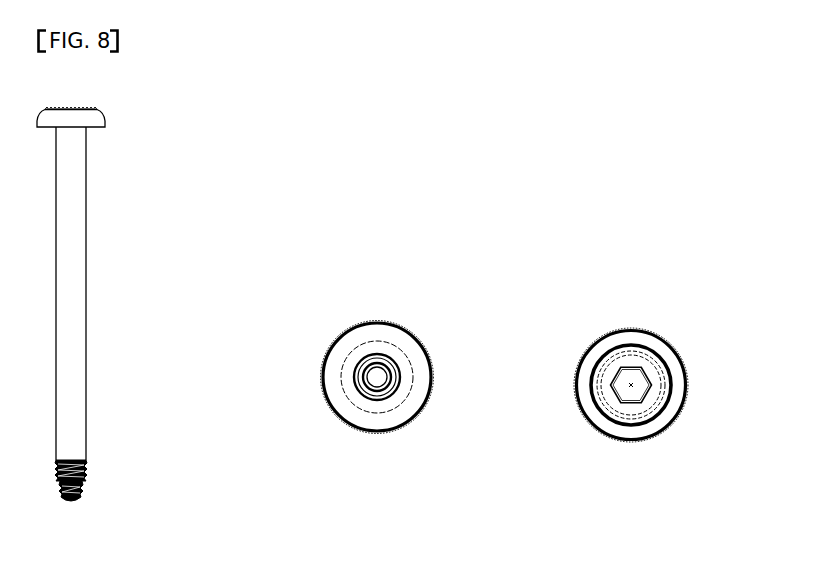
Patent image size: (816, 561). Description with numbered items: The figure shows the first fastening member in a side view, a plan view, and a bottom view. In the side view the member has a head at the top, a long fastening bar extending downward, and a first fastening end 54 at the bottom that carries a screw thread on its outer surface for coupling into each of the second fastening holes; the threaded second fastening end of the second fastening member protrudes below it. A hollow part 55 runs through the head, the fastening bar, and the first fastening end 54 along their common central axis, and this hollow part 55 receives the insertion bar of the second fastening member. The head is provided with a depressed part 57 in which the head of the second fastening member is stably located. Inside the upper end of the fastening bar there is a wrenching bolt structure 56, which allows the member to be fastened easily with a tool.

The first fastening end 54 is at (132, 475).
The hollow part 55 is at (681, 348).
The wrenching bolt structure 56 is at (675, 401).
The depressed part 57 is at (678, 378).